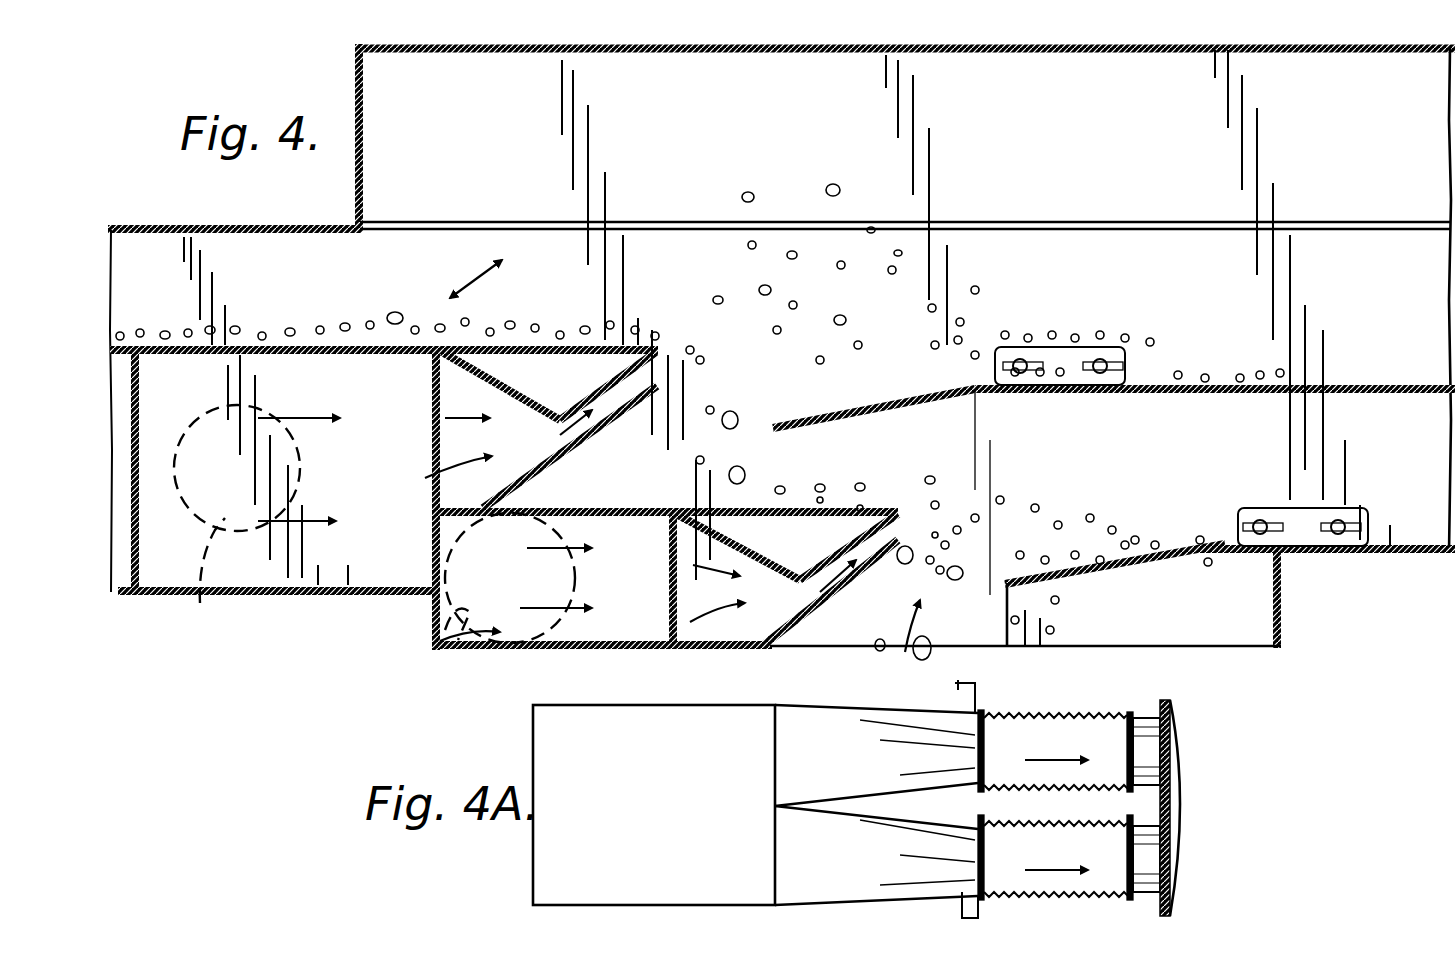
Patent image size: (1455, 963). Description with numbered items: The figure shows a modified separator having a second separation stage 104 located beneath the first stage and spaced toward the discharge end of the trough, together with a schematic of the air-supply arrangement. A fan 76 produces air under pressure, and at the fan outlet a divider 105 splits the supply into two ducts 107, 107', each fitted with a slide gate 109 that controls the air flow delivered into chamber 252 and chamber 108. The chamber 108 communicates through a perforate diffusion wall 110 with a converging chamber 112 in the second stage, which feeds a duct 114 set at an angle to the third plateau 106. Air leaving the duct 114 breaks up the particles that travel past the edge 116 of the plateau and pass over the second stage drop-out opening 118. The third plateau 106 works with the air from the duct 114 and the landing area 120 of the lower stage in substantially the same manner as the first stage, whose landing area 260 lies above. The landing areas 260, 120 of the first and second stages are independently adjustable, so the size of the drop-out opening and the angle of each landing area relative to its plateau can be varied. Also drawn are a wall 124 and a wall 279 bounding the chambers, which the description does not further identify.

In FIG. 4A, the fan 76 is at (533, 865).
In FIG. 4, the second separation stage 104 is at (893, 644).
In FIG. 4A, the divider 105 is at (868, 722).
In FIG. 4, the third plateau 106 is at (597, 508).
In FIG. 4, the duct 107 is at (526, 535).
In FIG. 4A, the duct 107 is at (1055, 846).
In FIG. 4, the duct 107' is at (277, 495).
In FIG. 4A, the duct 107' is at (1055, 736).
In FIG. 4, the chamber 108 is at (600, 648).
In FIG. 4A, the chamber 108 is at (1150, 845).
In FIG. 4A, the slide gate 109 is at (978, 683).
In FIG. 4, the perforate diffusion wall 110 is at (668, 570).
In FIG. 4, the converging chamber 112 is at (735, 648).
In FIG. 4, the duct 114 is at (828, 576).
In FIG. 4, the edge 116 is at (900, 505).
In FIG. 4, the second stage drop-out opening 118 is at (948, 538).
In FIG. 4, the landing area 120 is at (1125, 555).
In FIG. 4, the end wall 124 is at (1180, 632).
In FIG. 4, the chamber 252 is at (348, 570).
In FIG. 4A, the chamber 252 is at (1150, 745).
In FIG. 4, the landing area 260 is at (855, 400).
In FIG. 4, the chamber side wall 279 is at (450, 443).